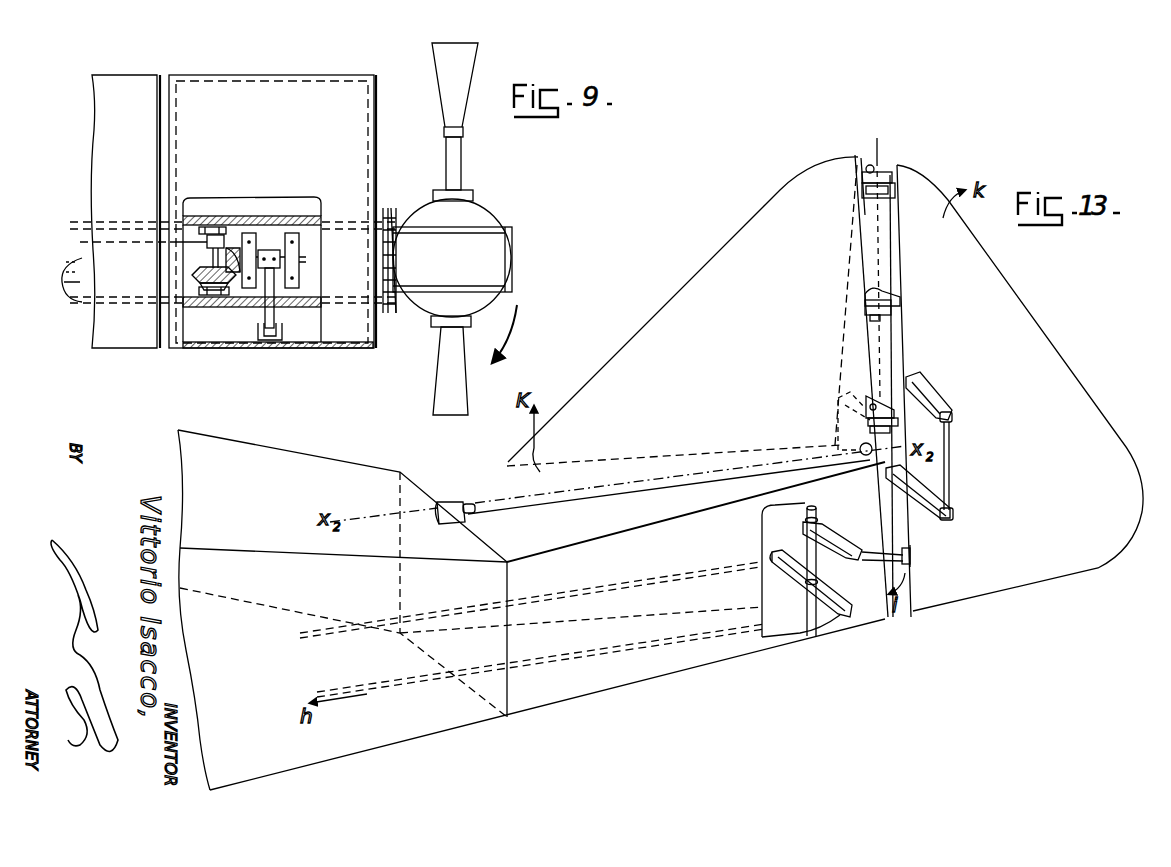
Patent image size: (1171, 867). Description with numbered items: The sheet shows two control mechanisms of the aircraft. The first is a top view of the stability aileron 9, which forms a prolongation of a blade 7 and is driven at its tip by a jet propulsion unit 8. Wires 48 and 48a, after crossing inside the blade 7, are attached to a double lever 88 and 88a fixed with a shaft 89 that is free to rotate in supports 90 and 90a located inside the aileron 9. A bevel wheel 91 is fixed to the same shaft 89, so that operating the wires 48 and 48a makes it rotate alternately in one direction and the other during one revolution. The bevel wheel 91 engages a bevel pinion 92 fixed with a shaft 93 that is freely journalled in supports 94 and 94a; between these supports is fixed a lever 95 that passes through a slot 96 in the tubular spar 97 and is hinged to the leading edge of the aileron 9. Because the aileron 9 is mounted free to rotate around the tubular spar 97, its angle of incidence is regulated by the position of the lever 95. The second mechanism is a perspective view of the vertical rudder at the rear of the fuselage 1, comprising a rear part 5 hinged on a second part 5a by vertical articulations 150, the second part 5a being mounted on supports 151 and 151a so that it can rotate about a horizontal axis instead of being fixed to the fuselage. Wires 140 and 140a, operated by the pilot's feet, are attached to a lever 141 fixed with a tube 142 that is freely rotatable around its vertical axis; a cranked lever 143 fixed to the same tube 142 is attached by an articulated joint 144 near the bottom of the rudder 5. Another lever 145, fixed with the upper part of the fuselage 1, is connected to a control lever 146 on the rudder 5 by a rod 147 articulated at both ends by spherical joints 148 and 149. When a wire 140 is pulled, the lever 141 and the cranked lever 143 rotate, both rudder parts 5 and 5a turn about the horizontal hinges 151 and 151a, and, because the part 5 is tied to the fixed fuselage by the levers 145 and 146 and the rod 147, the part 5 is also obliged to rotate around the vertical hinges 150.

In FIG. 13, the fuselage 1 is at (708, 665).
In FIG. 13, the vertical rudder (rear part) 5 is at (984, 266).
In FIG. 13, the vertical rudder (second part) 5a is at (700, 274).
In FIG. 9, the blade 7 is at (133, 88).
In FIG. 9, the jet propulsion unit 8 is at (478, 216).
In FIG. 9, the stability aileron 9 is at (307, 96).
In FIG. 9, the wire 48 is at (110, 230).
In FIG. 9, the wire 48a is at (112, 245).
In FIG. 9, the double lever 88 is at (222, 228).
In FIG. 9, the double lever 88a is at (214, 291).
In FIG. 9, the shaft 89 is at (208, 255).
In FIG. 9, the support 90 is at (212, 226).
In FIG. 9, the support 90a is at (210, 300).
In FIG. 9, the bevel wheel 91 is at (198, 278).
In FIG. 9, the bevel pinion 92 is at (224, 240).
In FIG. 9, the shaft 93 is at (300, 258).
In FIG. 9, the support 94 is at (248, 290).
In FIG. 9, the support 94a is at (292, 290).
In FIG. 9, the lever 95 is at (278, 320).
In FIG. 9, the slot 96 is at (270, 300).
In FIG. 9, the tubular spar 97 is at (136, 213).
In FIG. 13, the wire 140 is at (424, 674).
In FIG. 13, the wire 140a is at (337, 636).
In FIG. 13, the lever 141 is at (828, 612).
In FIG. 13, the tube 142 is at (812, 624).
In FIG. 13, the cranked lever 143 is at (857, 545).
In FIG. 13, the articulated joint 144 is at (912, 556).
In FIG. 13, the lever 145 is at (932, 503).
In FIG. 13, the control lever 146 is at (928, 390).
In FIG. 13, the rod 147 is at (952, 470).
In FIG. 13, the spherical joint 148 is at (954, 518).
In FIG. 13, the spherical joint 149 is at (952, 417).
In FIG. 13, the vertical articulation 150 is at (882, 176).
In FIG. 13, the support 151 is at (449, 500).
In FIG. 13, the support 151a is at (832, 425).